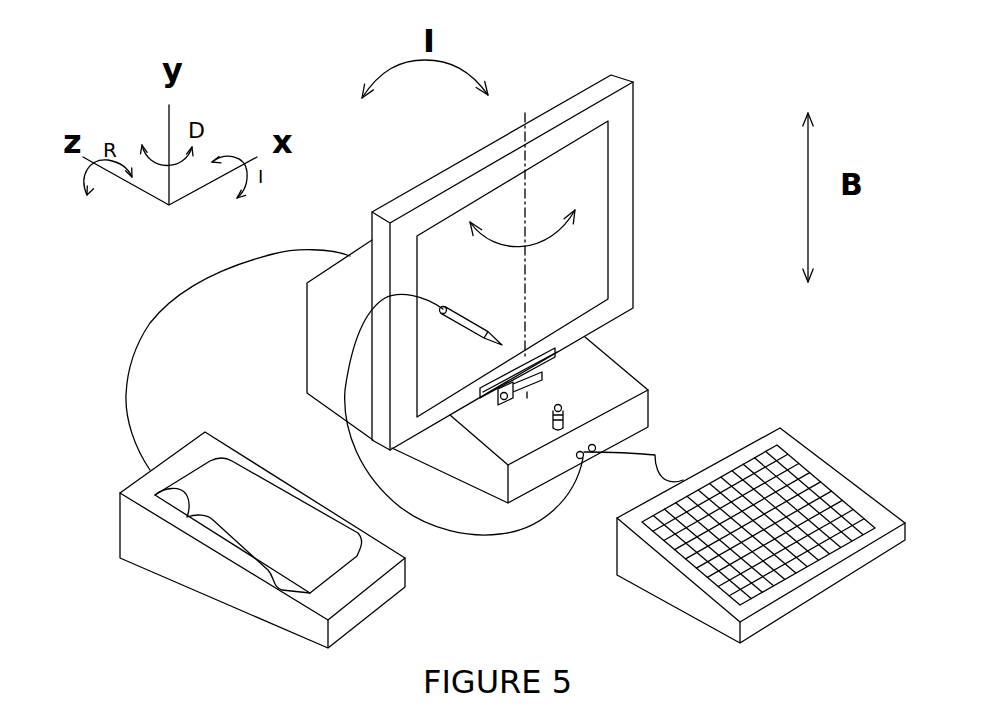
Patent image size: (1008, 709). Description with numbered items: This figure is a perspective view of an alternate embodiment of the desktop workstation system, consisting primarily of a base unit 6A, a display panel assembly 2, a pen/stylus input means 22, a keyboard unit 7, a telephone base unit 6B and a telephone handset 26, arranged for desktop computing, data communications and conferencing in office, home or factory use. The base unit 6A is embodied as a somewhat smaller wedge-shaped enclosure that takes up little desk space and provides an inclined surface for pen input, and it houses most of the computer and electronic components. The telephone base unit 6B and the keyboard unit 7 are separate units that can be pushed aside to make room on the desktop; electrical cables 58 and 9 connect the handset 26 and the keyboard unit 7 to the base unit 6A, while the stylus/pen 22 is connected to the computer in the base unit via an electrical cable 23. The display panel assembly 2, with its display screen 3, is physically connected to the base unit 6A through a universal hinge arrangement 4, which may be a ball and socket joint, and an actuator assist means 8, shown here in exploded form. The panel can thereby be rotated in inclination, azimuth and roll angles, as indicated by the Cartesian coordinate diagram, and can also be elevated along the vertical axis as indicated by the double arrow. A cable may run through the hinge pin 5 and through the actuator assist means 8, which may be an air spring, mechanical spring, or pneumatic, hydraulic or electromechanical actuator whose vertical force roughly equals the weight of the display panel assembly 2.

The display panel assembly 2 is at (622, 198).
The display screen 3 is at (580, 261).
The universal hinge arrangement 4 is at (543, 378).
The hinge pin 5 is at (523, 396).
The base unit 6A is at (317, 320).
The telephone base unit 6B is at (133, 547).
The keyboard unit 7 is at (810, 460).
The actuator assist means 8 is at (565, 405).
The electrical cable 9 is at (655, 455).
The pen/stylus input means 22 is at (480, 323).
The electrical cable 23 is at (488, 533).
The telephone handset 26 is at (250, 481).
The electrical cable 58 is at (132, 368).